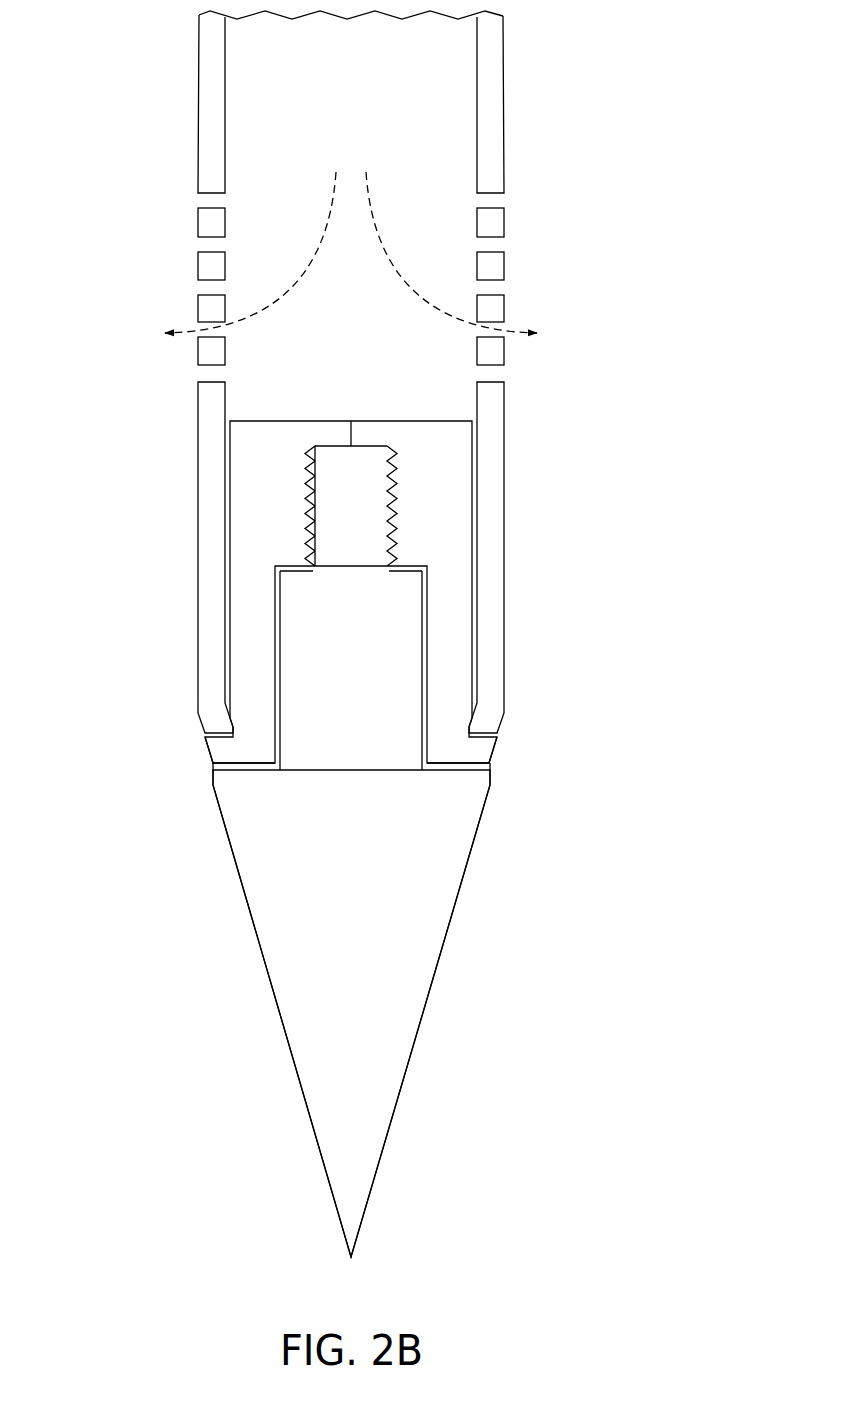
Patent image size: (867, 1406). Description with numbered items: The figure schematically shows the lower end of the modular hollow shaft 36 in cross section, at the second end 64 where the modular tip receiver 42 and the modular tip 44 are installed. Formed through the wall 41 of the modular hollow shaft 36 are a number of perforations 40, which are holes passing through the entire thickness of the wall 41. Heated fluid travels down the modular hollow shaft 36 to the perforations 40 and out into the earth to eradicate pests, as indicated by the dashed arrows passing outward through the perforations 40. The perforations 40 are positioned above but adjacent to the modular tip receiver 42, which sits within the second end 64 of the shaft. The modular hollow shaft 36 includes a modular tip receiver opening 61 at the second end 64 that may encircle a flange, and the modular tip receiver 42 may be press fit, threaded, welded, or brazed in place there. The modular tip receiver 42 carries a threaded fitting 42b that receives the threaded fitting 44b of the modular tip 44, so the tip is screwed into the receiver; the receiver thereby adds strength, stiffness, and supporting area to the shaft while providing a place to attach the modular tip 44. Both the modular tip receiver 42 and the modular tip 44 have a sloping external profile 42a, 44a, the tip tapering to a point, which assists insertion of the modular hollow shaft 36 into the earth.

The modular hollow shaft 36 is at (385, 372).
The perforations 40 is at (165, 285).
The wall 41 is at (490, 68).
The modular tip receiver 42 is at (390, 600).
The sloping external profile 42a is at (493, 749).
The threaded fitting 42b is at (394, 473).
The modular tip 44 is at (351, 885).
The sloping external profile 44a is at (418, 1025).
The threaded fitting 44b is at (392, 513).
The modular tip receiver opening 61 is at (524, 777).
The second end 64 is at (179, 774).